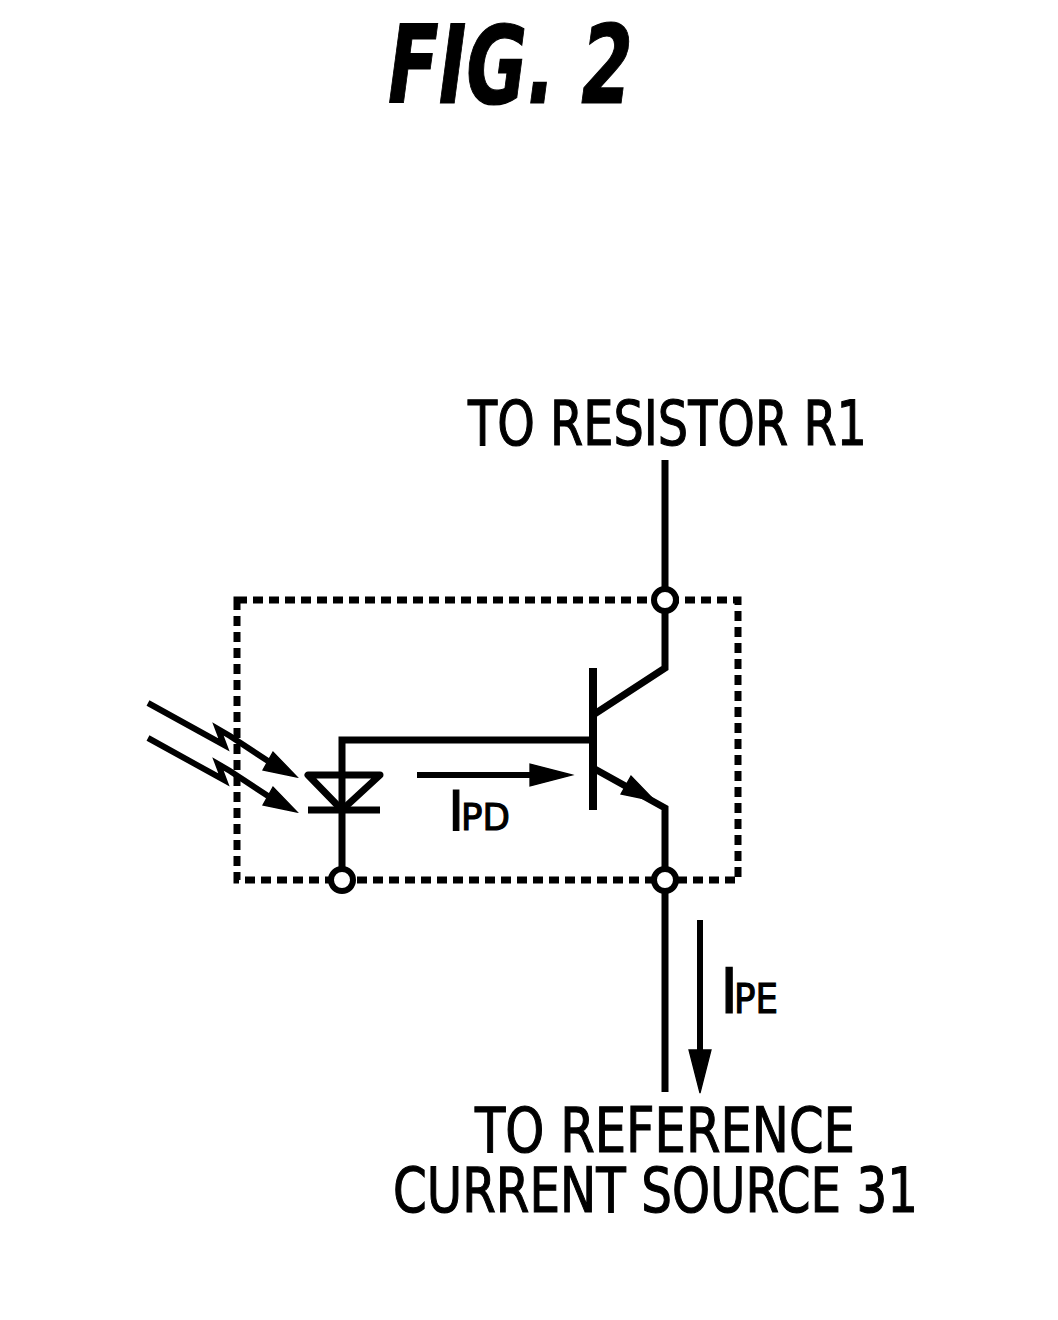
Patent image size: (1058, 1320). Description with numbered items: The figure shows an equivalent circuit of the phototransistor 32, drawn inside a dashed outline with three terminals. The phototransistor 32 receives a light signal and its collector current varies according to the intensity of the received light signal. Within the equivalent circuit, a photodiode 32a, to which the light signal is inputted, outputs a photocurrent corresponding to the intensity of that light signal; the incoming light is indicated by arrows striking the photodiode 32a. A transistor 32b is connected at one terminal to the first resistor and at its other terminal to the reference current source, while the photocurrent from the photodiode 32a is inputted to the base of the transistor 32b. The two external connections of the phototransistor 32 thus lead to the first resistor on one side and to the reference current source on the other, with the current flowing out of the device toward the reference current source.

The phototransistor 32 is at (413, 598).
The photodiode 32a is at (320, 760).
The transistor 32b is at (665, 704).